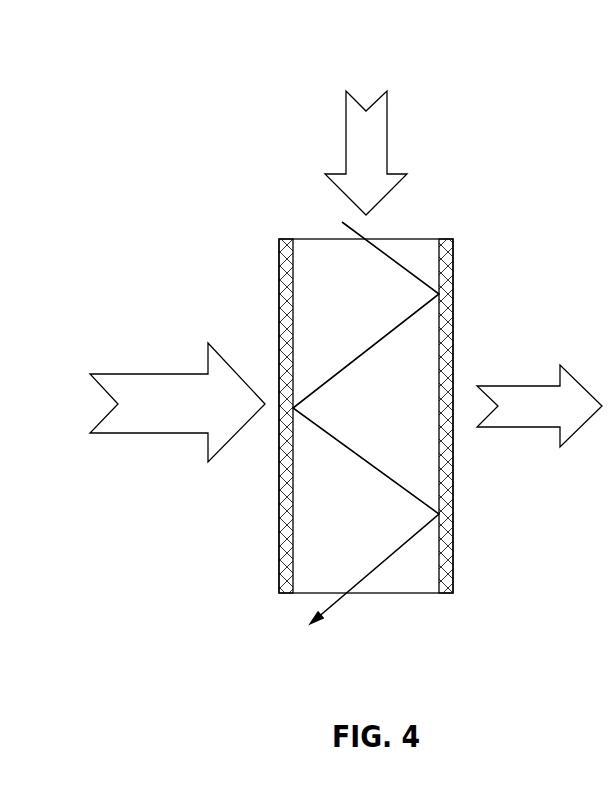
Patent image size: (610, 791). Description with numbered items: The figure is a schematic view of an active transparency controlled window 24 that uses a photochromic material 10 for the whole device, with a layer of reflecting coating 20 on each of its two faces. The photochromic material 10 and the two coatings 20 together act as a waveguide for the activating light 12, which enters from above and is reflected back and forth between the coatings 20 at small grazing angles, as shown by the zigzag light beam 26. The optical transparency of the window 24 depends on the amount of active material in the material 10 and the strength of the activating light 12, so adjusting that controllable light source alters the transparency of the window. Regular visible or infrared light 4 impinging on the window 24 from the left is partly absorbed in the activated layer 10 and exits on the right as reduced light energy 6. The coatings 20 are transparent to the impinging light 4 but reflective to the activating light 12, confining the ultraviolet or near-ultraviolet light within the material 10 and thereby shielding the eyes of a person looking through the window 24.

The impinging light 4 is at (137, 374).
The reduced light energy 6 is at (503, 386).
The photochromic material 10 is at (388, 595).
The activating light 12 is at (387, 118).
The reflecting coating 20 is at (286, 595).
The active transparency controlled window 24 is at (520, 158).
The light beam 26 is at (337, 605).